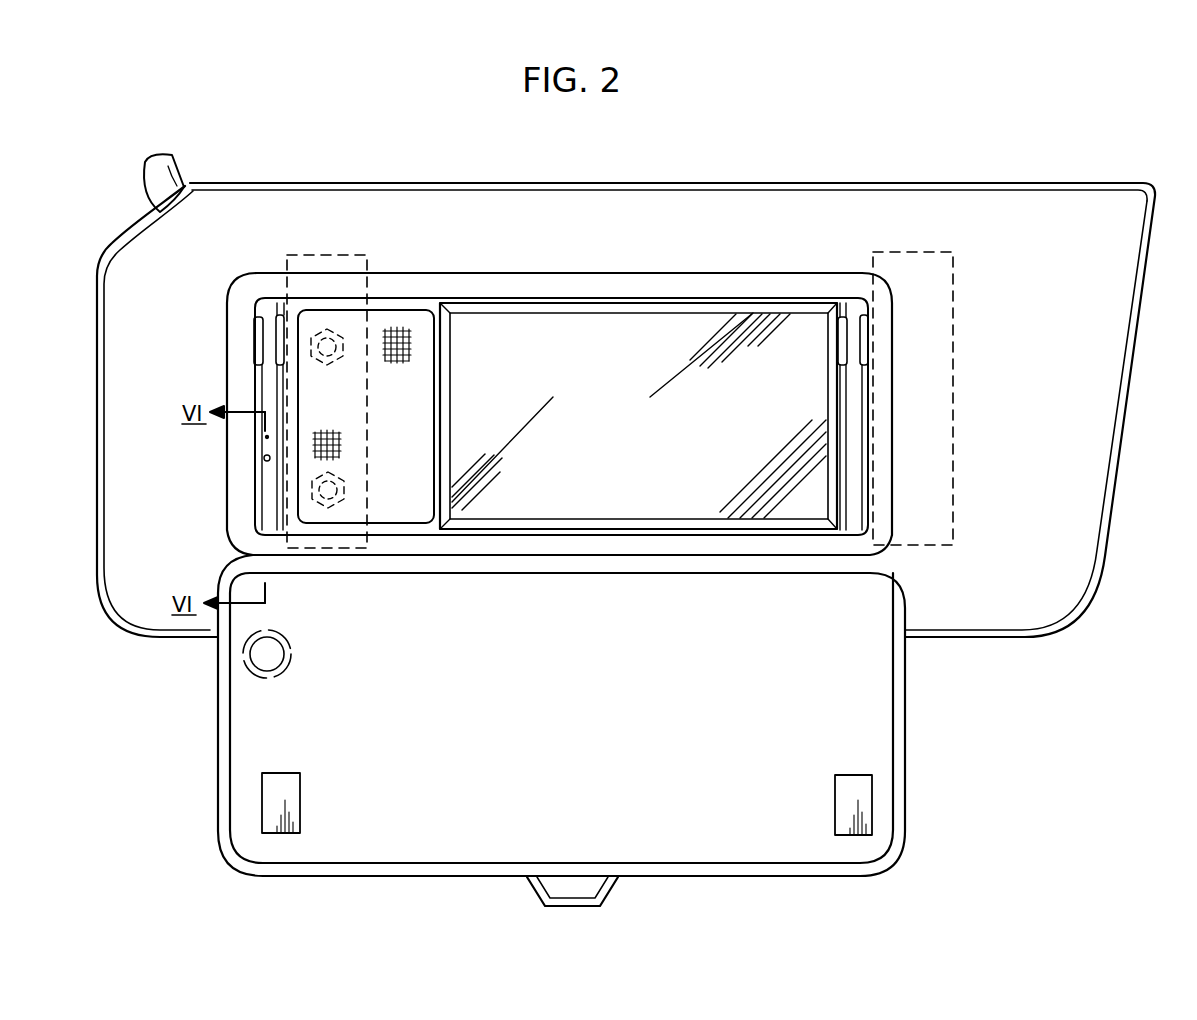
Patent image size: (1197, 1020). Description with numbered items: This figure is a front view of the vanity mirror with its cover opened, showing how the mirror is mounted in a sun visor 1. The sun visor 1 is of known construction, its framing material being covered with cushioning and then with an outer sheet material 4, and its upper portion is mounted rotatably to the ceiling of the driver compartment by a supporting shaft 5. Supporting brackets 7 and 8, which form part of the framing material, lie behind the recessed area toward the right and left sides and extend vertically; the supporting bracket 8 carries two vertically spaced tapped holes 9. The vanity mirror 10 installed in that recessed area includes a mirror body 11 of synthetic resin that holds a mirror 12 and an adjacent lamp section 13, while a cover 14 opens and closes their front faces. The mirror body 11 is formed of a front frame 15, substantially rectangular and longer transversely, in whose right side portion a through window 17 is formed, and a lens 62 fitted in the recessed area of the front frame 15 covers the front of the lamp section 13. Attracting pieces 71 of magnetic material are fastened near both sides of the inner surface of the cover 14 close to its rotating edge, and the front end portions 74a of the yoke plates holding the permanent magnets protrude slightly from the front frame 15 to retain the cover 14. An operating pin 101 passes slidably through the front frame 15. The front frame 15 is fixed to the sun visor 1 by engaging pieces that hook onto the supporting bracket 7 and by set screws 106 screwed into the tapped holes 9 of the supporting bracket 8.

The sun visor 1 is at (1040, 162).
The sheet material 4 is at (1093, 494).
The supporting shaft 5 is at (173, 166).
The supporting bracket 7 is at (953, 278).
The supporting bracket 8 is at (285, 258).
The tapped holes 9 is at (326, 360).
The vanity mirror 10 is at (559, 371).
The mirror body 11 is at (778, 272).
The mirror 12 is at (624, 323).
The lamp section 13 is at (408, 312).
The cover 14 is at (893, 731).
The front frame 15 is at (507, 281).
The through window 17 is at (563, 514).
The lens 62 is at (427, 419).
The attracting pieces 71 is at (297, 781).
The front end portions 74a is at (277, 356).
The operating pin 101 is at (262, 457).
The set screws 106 is at (338, 348).